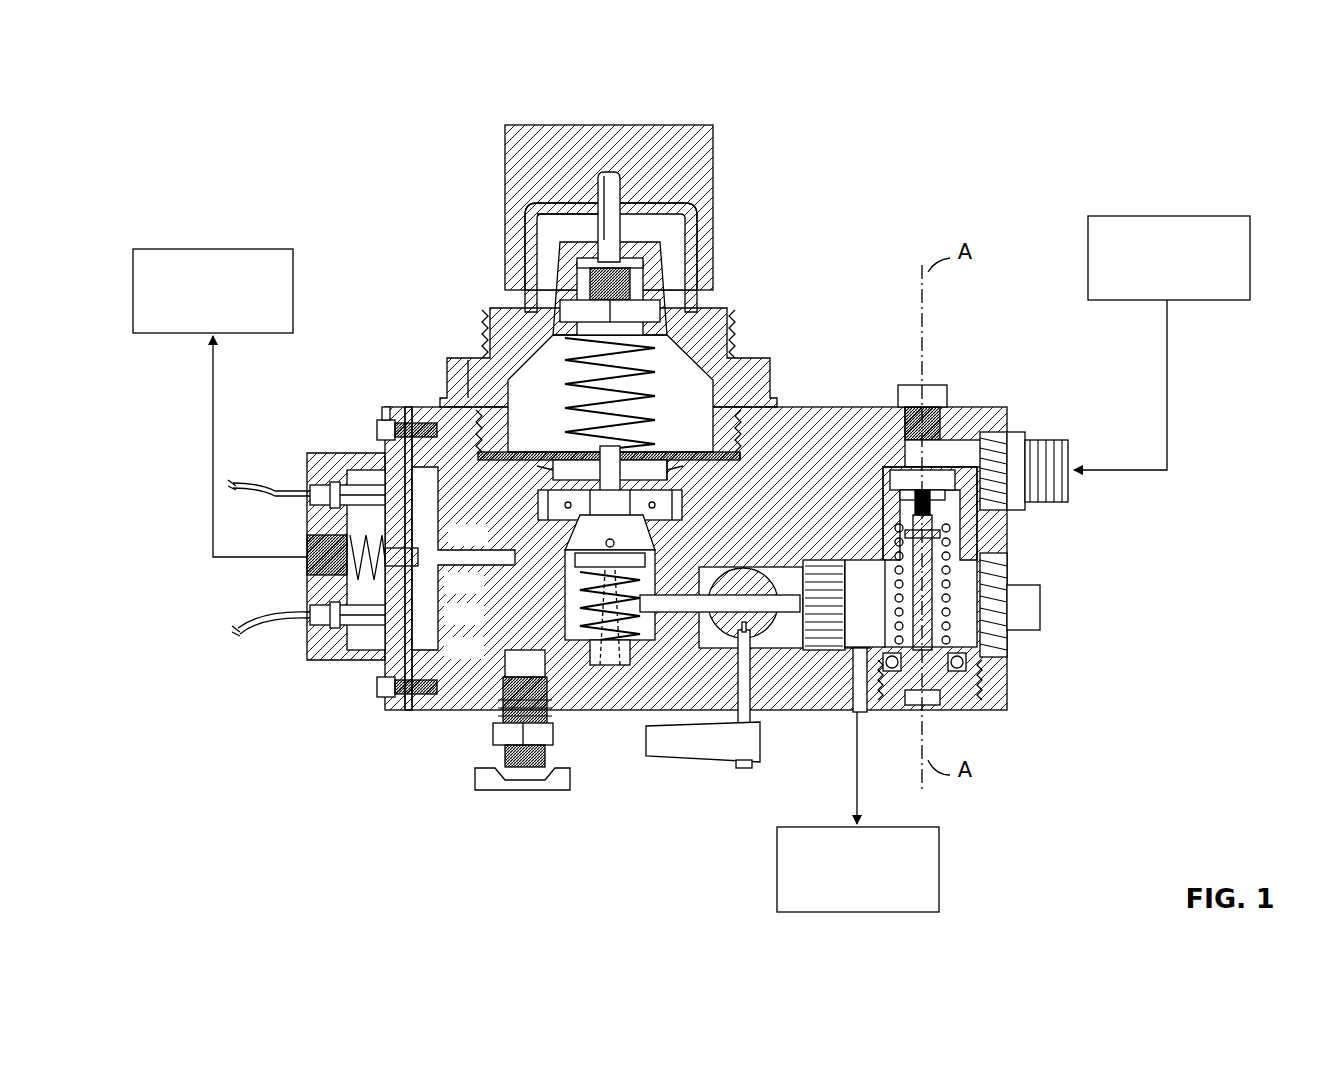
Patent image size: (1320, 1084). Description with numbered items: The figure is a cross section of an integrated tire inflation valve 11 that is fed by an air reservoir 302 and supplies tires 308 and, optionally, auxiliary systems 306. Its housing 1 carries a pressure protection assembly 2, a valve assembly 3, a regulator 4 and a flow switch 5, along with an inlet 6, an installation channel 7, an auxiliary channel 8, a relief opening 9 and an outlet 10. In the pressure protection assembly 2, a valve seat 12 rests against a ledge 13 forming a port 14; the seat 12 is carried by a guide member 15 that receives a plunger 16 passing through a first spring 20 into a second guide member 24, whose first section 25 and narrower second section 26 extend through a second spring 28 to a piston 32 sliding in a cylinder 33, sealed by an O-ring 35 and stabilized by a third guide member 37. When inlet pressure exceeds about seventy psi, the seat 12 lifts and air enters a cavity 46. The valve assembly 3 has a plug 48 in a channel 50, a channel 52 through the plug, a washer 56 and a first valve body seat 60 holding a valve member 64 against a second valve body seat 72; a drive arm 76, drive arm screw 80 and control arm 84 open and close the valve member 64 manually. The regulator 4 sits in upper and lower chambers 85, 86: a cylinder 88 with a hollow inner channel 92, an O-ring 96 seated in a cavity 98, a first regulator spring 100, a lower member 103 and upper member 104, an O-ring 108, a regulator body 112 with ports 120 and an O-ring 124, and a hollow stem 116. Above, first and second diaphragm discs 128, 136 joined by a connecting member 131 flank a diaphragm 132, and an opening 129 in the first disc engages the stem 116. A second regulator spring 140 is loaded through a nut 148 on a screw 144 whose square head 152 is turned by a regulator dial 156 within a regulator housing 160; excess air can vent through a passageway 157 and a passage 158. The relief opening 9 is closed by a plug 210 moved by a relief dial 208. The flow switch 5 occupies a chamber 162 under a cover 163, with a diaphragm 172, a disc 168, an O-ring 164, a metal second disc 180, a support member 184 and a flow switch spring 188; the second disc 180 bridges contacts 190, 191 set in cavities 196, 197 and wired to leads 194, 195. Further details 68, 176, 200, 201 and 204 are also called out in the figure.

The housing 1 is at (760, 490).
The pressure protection assembly 2 is at (945, 505).
The valve assembly 3 is at (755, 548).
The regulator 4 is at (720, 118).
The flow switch 5 is at (380, 466).
The inlet 6 is at (1072, 468).
The installation opening or channel 7 is at (1012, 636).
The auxiliary opening or channel 8 is at (860, 725).
The relief opening or channel 9 is at (508, 772).
The outlet 10 is at (395, 560).
The integrated tire inflation valve 11 is at (1095, 172).
The valve seat 12 is at (978, 468).
The ledge 13 is at (913, 385).
The port 14 is at (935, 472).
The guide member 15 is at (842, 562).
The plunger 16 is at (884, 470).
The first spring 20 is at (950, 495).
The second guide member 24 is at (965, 530).
The first section 25 is at (815, 578).
The second section 26 is at (992, 565).
The second spring 28 is at (1000, 645).
The piston 32 is at (1040, 615).
The cylinder 33 is at (986, 690).
The O-ring 35 is at (858, 640).
The third guide member 37 is at (950, 708).
The cavity 46 is at (992, 588).
The plug 48 is at (805, 580).
The channel 50 is at (822, 553).
The channel 52 is at (920, 708).
The washer 56 is at (818, 652).
The first valve body seat 60 is at (770, 650).
The valve member 64 is at (742, 725).
The pin 68 is at (750, 660).
The second valve body seat 72 is at (692, 760).
The drive arm 76 is at (744, 770).
The drive arm screw 80 is at (708, 745).
The control arm 84 is at (733, 750).
The upper chamber 85 is at (676, 382).
The lower chamber 86 is at (648, 618).
The cylinder 88 is at (604, 660).
The hollow inner channel 92 is at (612, 655).
The O-ring 96 is at (656, 650).
The cavity 98 is at (632, 660).
The first regulator spring 100 is at (575, 650).
The lower member 103 is at (620, 665).
The upper member 104 is at (560, 640).
The O-ring 108 is at (515, 645).
The regulator body 112 is at (515, 612).
The hollow stem 116 is at (640, 540).
The ports 120 is at (515, 580).
The O-ring 124 is at (515, 535).
The first diaphragm disc 128 is at (560, 470).
The opening 129 is at (594, 456).
The connecting member 131 is at (672, 462).
The diaphragm 132 is at (748, 453).
The second diaphragm disc 136 is at (700, 450).
The second regulator spring 140 is at (580, 328).
The screw 144 is at (583, 285).
The nut 148 is at (662, 310).
The square head 152 is at (620, 185).
The regulator dial 156 is at (700, 160).
The passageway 157 is at (565, 205).
The passage 158 is at (575, 210).
The regulator housing 160 is at (690, 252).
The chamber 162 is at (384, 428).
The cover 163 is at (386, 645).
The O-ring 164 is at (418, 420).
The disc 168 is at (408, 460).
The diaphragm 172 is at (385, 688).
The threads 176 is at (472, 448).
The second disc 180 is at (322, 548).
The support member 184 is at (265, 618).
The flow switch spring 188 is at (355, 560).
The contact 190 is at (356, 466).
The contact 191 is at (345, 655).
The lead 194 is at (270, 482).
The lead 195 is at (258, 638).
The cavity 196 is at (330, 487).
The cavity 197 is at (312, 662).
The terminal contact 200 is at (320, 505).
The terminal 201 is at (320, 615).
The screw threads 204 is at (938, 405).
The relief dial 208 is at (480, 782).
The plug 210 is at (500, 700).
The air reservoir 302 is at (1190, 216).
The auxiliary systems 306 is at (940, 877).
The tires 308 is at (212, 249).